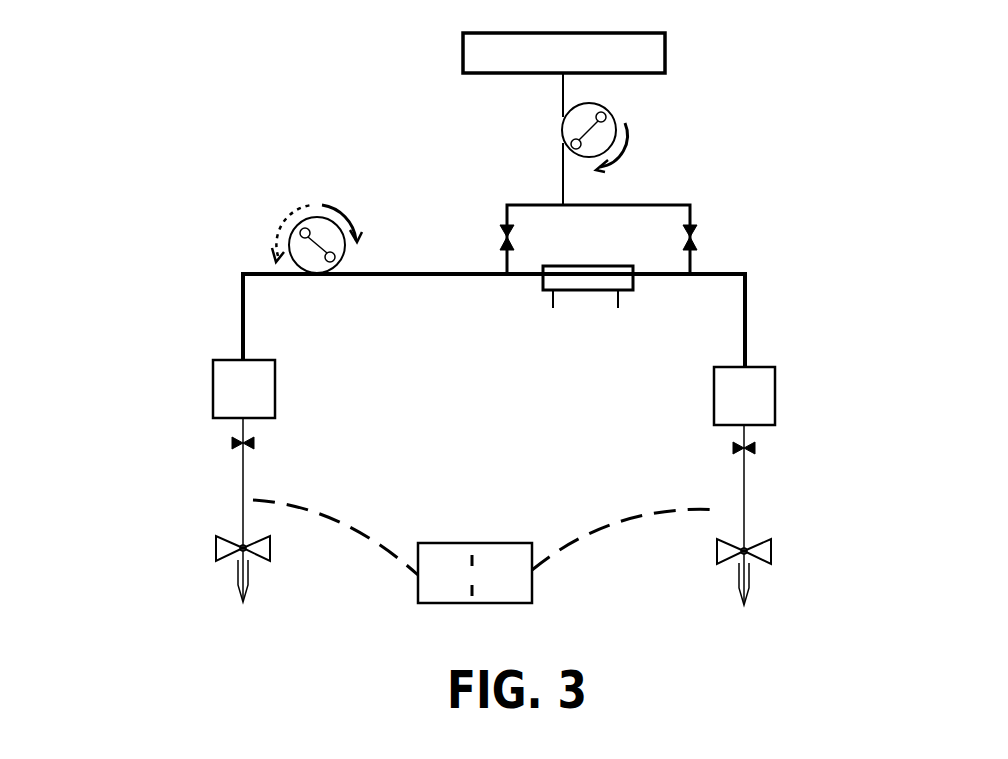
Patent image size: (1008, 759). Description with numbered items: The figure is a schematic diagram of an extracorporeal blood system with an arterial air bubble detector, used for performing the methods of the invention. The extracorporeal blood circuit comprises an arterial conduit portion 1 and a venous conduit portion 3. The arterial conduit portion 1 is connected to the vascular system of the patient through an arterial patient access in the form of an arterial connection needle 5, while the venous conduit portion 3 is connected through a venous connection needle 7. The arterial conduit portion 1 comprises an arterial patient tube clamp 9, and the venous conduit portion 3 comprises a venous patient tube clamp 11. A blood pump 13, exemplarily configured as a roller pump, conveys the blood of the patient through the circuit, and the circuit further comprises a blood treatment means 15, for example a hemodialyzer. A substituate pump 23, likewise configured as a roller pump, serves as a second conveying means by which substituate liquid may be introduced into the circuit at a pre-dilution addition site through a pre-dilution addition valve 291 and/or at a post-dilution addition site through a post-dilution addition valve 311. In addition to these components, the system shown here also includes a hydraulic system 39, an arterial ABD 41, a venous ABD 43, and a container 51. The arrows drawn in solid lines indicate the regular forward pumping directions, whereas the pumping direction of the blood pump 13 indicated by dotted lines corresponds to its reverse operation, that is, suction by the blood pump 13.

The arterial conduit portion 1 is at (196, 326).
The venous conduit portion 3 is at (755, 343).
The arterial connection needle 5 is at (215, 548).
The venous connection needle 7 is at (715, 551).
The arterial patient tube clamp 9 is at (252, 445).
The venous patient tube clamp 11 is at (752, 450).
The blood pump 13 is at (250, 222).
The blood treatment means 15 is at (578, 307).
The substituate pump 23 is at (652, 133).
The hydraulic system 39 is at (462, 56).
The arterial ABD 41 is at (277, 381).
The venous ABD 43 is at (777, 396).
The container 51 is at (471, 538).
The pre-dilution addition valve 291 is at (493, 222).
The post-dilution addition valve 311 is at (702, 233).